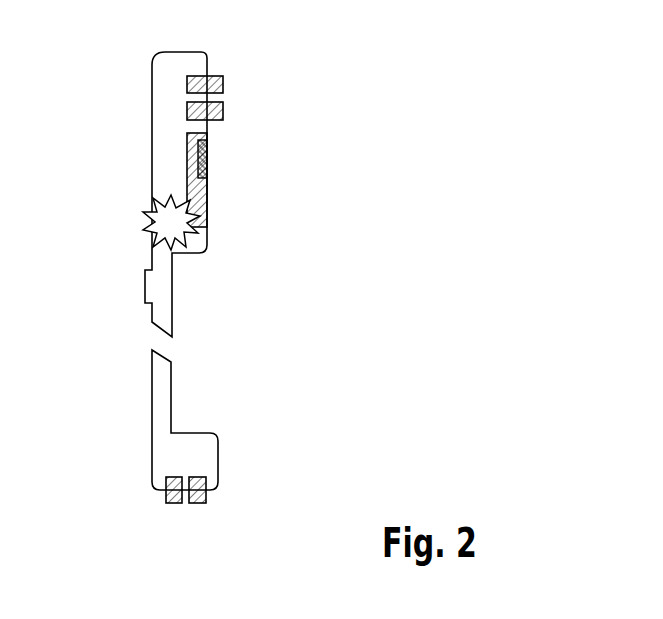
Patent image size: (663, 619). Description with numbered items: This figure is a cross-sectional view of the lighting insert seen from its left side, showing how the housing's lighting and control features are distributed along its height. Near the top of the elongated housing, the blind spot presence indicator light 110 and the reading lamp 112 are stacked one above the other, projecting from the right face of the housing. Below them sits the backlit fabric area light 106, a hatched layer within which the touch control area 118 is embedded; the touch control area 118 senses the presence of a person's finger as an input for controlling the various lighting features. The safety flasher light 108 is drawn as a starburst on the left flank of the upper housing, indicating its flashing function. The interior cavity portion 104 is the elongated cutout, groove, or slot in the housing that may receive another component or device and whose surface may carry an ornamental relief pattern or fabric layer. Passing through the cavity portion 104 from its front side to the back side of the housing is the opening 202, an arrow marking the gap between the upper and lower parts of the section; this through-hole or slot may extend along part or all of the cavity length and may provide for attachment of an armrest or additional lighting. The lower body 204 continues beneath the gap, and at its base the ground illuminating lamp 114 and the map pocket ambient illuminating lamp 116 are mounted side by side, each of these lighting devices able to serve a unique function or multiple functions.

The interior cavity portion 104 is at (172, 300).
The backlit fabric area light 106 is at (208, 187).
The safety flasher light 108 is at (162, 200).
The blind spot presence indicator light 110 is at (224, 83).
The reading lamp 112 is at (224, 108).
The ground illuminating lamp 114 is at (207, 492).
The map pocket ambient illuminating lamp 116 is at (165, 490).
The touch control area 118 is at (208, 148).
The opening 202 is at (190, 350).
The lower body portion 204 is at (190, 435).